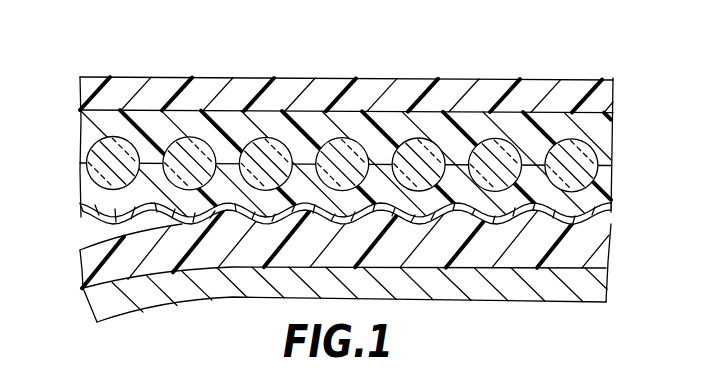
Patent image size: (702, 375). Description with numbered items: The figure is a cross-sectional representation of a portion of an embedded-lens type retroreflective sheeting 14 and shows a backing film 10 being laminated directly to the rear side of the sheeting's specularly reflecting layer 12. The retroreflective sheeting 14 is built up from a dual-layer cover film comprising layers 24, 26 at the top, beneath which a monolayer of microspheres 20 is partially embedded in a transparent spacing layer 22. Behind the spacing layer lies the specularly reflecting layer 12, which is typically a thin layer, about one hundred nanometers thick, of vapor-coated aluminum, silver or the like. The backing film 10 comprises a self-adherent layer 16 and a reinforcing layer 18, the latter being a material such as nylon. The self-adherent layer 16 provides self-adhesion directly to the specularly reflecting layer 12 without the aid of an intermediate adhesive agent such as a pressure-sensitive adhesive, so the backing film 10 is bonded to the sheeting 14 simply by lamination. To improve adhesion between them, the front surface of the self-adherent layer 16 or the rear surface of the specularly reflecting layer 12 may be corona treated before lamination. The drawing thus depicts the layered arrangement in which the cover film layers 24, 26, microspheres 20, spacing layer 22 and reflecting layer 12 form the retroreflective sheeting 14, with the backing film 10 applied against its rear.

The backing film 10 is at (79, 286).
The specularly reflecting layer 12 is at (606, 205).
The embedded-lens type retroreflective sheeting 14 is at (94, 68).
The self-adherent layer 16 is at (608, 240).
The reinforcing layer 18 is at (581, 300).
The microspheres 20 is at (483, 147).
The transparent spacing layer 22 is at (90, 192).
The cover film layer 24 is at (615, 127).
The cover film layer 26 is at (576, 92).